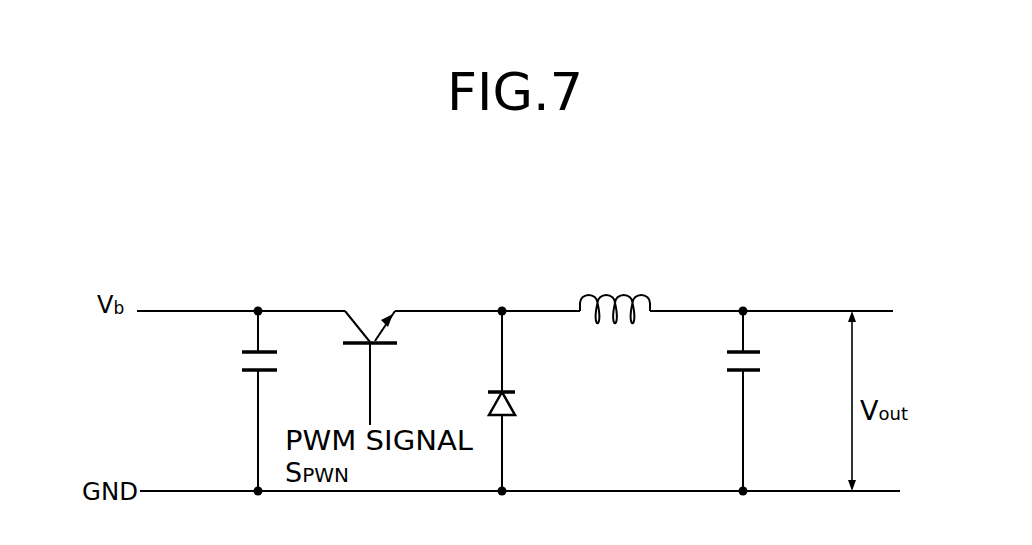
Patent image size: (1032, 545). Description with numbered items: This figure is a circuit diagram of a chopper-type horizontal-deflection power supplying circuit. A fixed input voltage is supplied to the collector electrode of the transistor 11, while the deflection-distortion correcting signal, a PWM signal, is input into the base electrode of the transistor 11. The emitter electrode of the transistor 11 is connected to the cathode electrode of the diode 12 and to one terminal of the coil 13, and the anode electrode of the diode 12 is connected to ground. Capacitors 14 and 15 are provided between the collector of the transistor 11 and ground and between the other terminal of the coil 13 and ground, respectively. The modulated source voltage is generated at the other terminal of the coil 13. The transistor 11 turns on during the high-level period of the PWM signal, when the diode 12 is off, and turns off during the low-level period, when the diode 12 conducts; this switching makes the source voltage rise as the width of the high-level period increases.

The transistor 11 is at (373, 311).
The diode 12 is at (515, 405).
The coil 13 is at (620, 300).
The capacitor 14 is at (237, 362).
The capacitor 15 is at (767, 360).